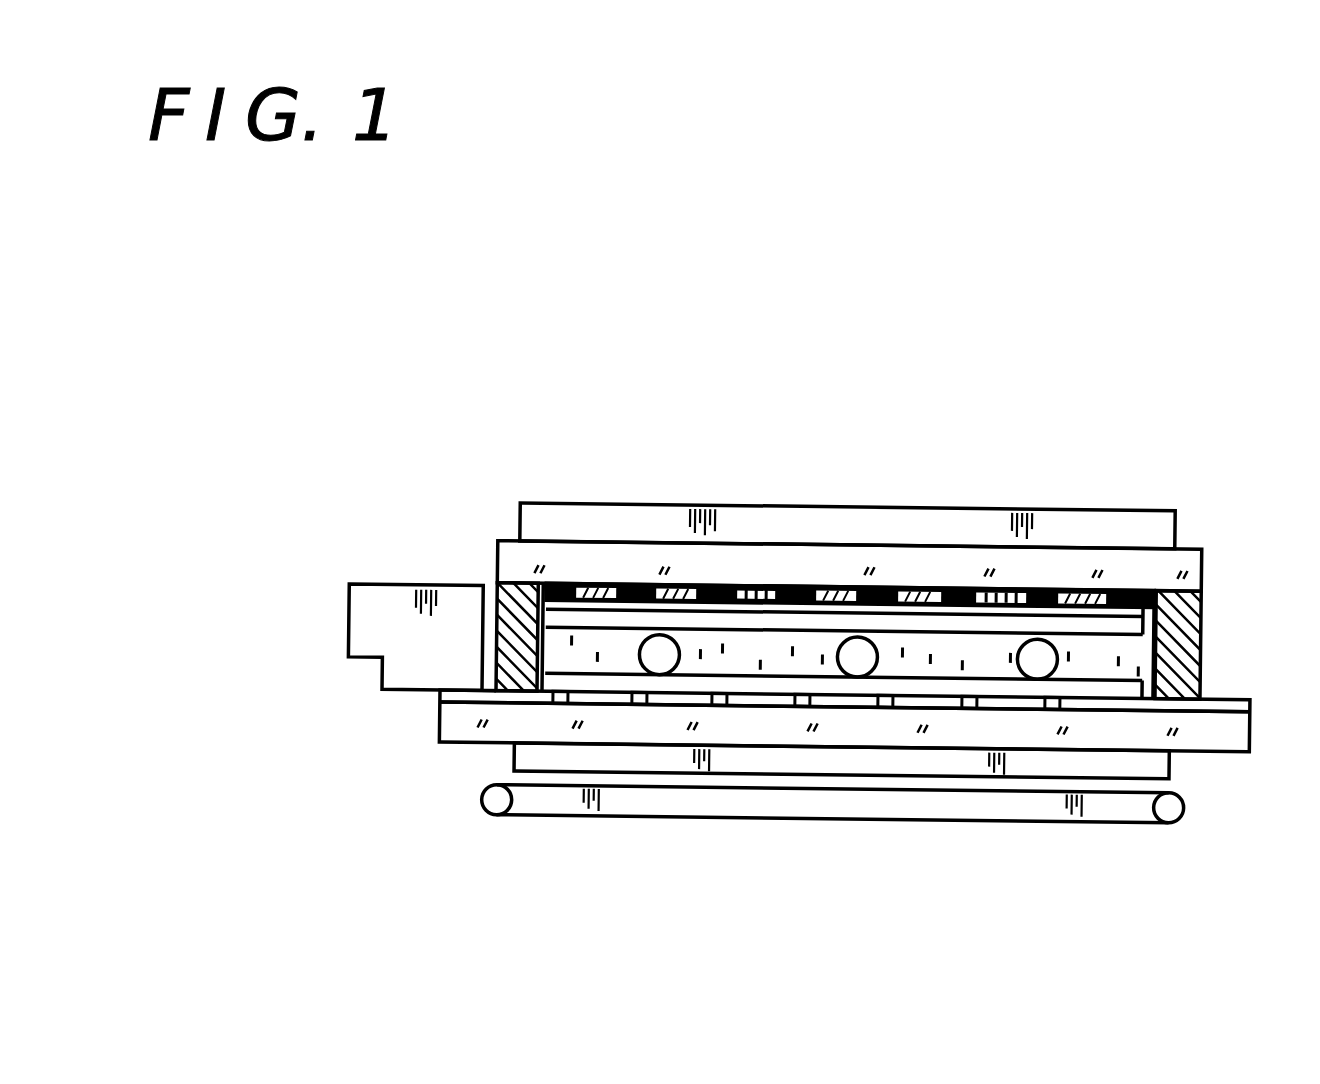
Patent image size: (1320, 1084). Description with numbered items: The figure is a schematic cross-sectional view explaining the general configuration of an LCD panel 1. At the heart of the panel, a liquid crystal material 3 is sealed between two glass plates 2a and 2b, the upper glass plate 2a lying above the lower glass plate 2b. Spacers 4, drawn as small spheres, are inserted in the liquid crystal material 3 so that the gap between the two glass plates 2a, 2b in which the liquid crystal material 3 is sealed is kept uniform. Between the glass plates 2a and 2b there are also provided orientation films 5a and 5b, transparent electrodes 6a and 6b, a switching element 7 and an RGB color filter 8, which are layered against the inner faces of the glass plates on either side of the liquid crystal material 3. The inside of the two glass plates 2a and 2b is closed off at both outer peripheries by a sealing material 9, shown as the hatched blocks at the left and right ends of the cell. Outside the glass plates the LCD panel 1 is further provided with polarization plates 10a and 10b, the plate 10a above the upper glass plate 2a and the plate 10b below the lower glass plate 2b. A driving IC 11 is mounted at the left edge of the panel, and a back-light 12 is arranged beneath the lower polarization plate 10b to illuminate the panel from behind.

The LCD panel 1 is at (1127, 482).
The glass plate 2a is at (1073, 565).
The glass plate 2b is at (1038, 733).
The liquid crystal material 3 is at (737, 667).
The spacers 4 is at (1057, 657).
The orientation film 5a is at (587, 623).
The orientation film 5b is at (602, 687).
The transparent electrode 6a is at (963, 608).
The transparent electrode 6b is at (935, 708).
The switching element 7 is at (638, 700).
The RGB color filter 8 is at (757, 590).
The sealing material 9 is at (1200, 623).
The polarization plate 10a is at (862, 530).
The polarization plate 10b is at (563, 757).
The driving IC 11 is at (375, 630).
The back-light 12 is at (1187, 807).